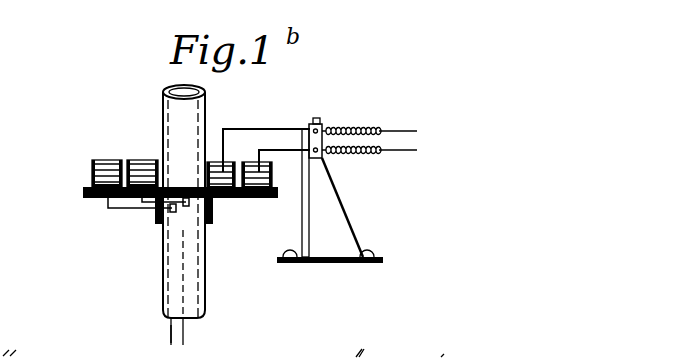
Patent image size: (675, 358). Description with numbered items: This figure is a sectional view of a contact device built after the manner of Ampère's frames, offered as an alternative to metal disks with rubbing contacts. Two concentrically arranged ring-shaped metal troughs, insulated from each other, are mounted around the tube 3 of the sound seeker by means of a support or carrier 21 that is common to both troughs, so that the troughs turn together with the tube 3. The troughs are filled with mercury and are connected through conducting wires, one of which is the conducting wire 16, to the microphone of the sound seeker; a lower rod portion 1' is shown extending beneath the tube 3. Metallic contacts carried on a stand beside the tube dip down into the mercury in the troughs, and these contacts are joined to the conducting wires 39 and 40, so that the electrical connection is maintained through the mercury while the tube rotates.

The tube 3 is at (204, 294).
The rod 1' is at (199, 337).
The conducting wire 16 is at (169, 331).
The support or carrier 21 is at (92, 197).
The conducting wire 40 is at (386, 130).
The conducting wire 39 is at (397, 153).